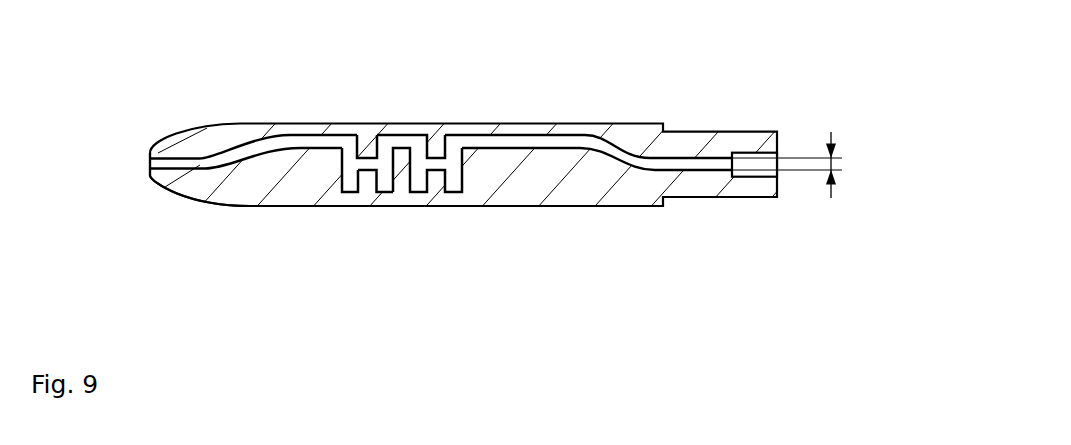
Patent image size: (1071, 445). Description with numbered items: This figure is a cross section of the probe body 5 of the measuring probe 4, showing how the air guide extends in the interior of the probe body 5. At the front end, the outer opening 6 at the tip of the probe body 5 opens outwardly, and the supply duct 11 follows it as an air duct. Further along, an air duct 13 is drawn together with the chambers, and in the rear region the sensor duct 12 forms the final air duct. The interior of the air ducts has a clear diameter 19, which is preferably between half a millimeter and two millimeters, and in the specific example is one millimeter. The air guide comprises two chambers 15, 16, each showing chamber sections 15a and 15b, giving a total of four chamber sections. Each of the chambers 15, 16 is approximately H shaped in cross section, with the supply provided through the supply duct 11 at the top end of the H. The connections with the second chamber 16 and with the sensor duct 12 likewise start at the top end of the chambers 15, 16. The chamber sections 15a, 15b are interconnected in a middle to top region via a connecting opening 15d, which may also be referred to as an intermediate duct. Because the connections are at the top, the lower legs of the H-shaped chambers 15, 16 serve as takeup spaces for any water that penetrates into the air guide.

The measuring probe 4 is at (156, 76).
The probe body 5 is at (188, 196).
The outer opening 6 is at (123, 167).
The supply duct 11 is at (261, 147).
The sensor duct 12 is at (561, 140).
The air duct 13 is at (402, 140).
The chamber 15 is at (311, 218).
The chamber section 15a is at (350, 192).
The chamber section 15b is at (384, 192).
The connecting opening 15d is at (368, 142).
The second chamber 16 is at (466, 217).
The clear diameter 19 is at (832, 163).